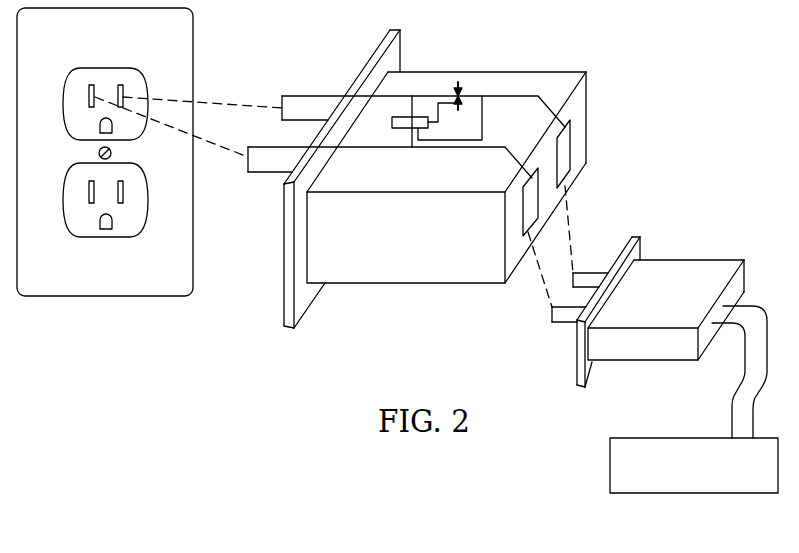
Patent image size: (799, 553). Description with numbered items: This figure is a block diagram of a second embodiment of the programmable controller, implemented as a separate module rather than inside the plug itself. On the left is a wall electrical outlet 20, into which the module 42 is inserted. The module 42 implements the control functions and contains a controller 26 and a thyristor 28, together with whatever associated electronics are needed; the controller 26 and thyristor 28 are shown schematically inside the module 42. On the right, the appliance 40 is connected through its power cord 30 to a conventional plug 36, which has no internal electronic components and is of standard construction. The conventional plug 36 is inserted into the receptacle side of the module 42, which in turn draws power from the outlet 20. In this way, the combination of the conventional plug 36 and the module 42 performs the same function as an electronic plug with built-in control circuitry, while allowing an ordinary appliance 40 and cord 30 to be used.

The electrical outlet 20 is at (188, 34).
The controller 26 is at (420, 117).
The thyristor 28 is at (458, 90).
The power cord 30 is at (738, 388).
The conventional plug 36 is at (695, 277).
The appliance 40 is at (610, 473).
The module 42 is at (417, 283).